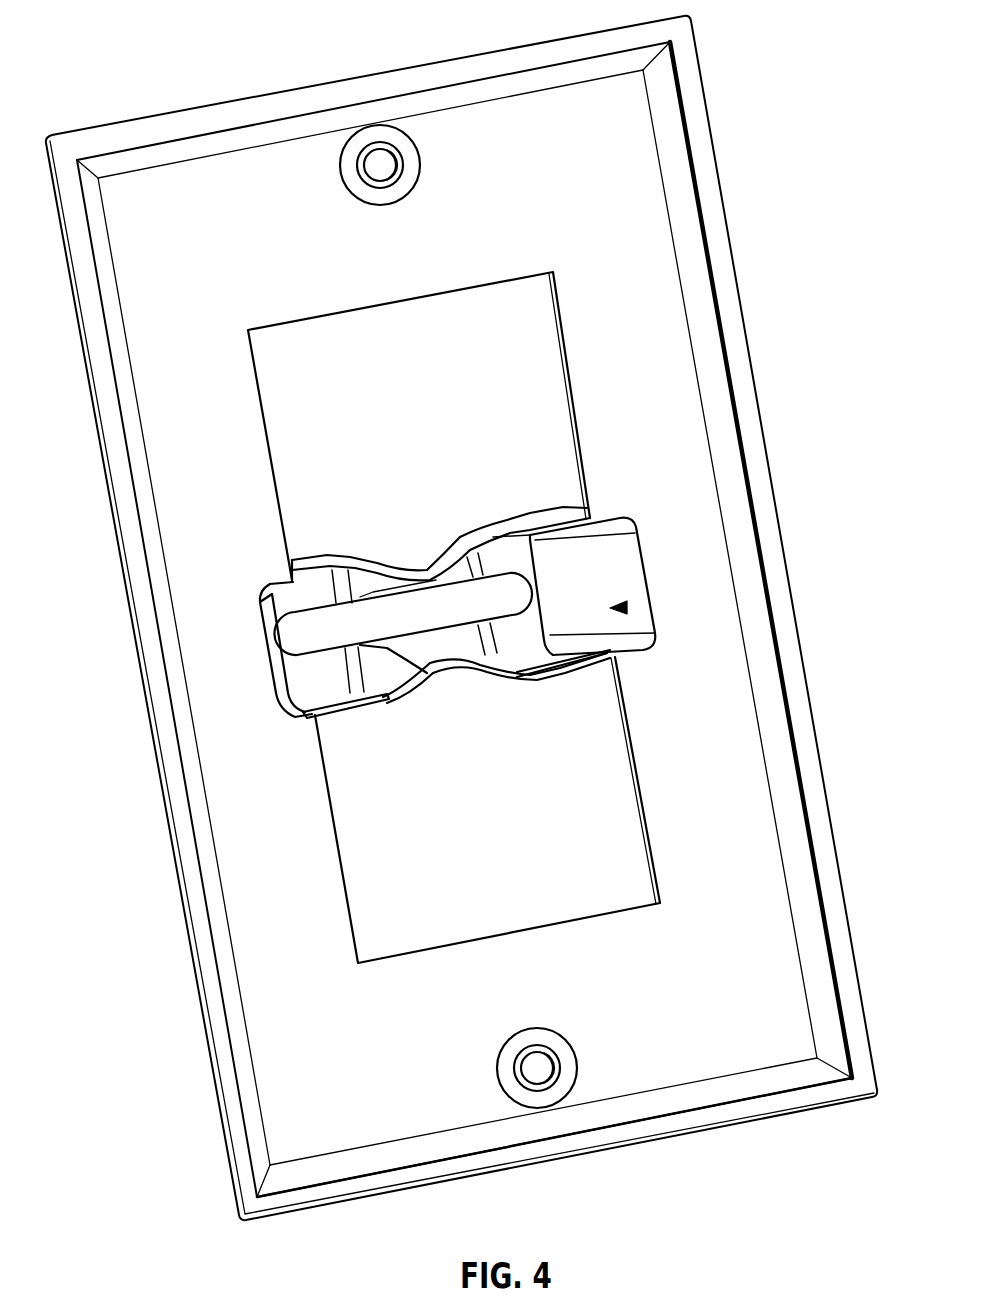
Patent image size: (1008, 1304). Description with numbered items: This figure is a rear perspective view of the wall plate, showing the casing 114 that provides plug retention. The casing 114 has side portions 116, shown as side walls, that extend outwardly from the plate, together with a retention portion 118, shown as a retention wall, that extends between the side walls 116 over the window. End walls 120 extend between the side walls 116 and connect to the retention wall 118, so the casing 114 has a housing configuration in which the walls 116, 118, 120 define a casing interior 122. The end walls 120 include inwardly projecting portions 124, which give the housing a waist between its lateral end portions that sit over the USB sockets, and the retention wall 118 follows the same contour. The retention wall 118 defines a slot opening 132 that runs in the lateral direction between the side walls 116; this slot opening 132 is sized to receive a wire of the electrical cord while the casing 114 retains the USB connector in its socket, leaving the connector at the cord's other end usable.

The casing 114 is at (355, 716).
The side portions 116 is at (618, 558).
The retention portion 118 is at (307, 675).
The end walls 120 is at (560, 673).
The casing interior 122 is at (624, 606).
The inwardly projecting portions 124 is at (432, 562).
The slot opening 132 is at (327, 610).